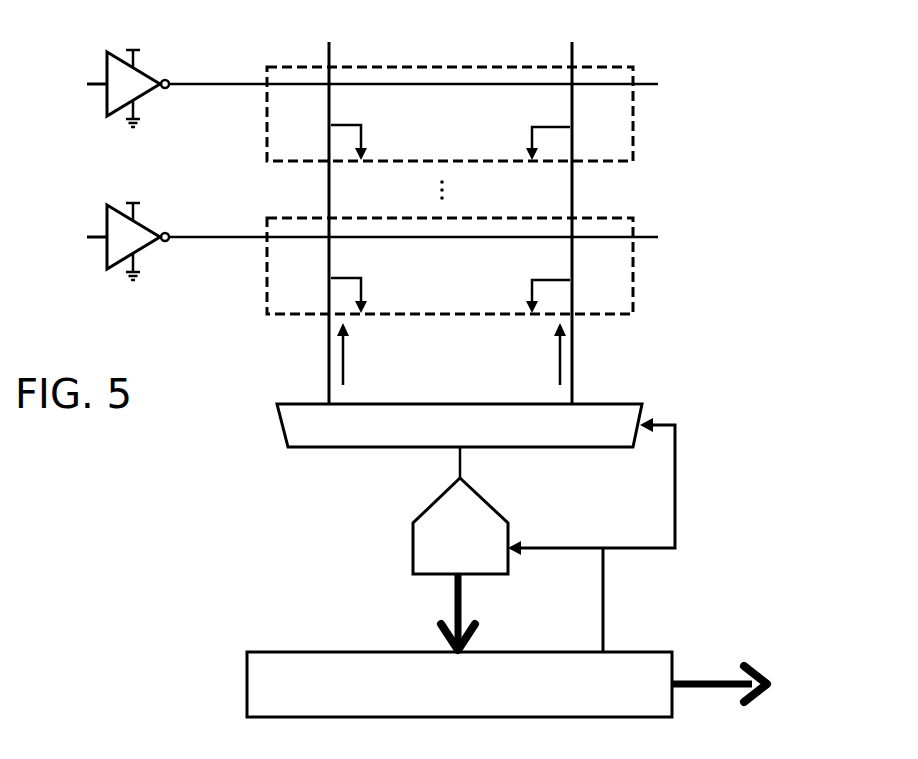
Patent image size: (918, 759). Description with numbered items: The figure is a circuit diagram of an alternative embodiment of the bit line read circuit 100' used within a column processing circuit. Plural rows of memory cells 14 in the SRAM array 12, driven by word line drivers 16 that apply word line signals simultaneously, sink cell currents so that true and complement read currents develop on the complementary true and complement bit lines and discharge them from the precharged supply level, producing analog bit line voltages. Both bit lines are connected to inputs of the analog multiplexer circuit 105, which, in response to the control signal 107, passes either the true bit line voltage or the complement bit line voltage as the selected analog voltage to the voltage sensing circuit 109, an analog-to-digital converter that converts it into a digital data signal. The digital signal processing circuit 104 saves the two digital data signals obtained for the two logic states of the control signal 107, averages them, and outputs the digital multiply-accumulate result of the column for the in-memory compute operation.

The bit line read circuit 100' is at (445, 367).
The array 12 is at (666, 180).
The memory cells 14 is at (633, 117).
The word line driver 16 is at (100, 101).
The digital signal processing circuit 104 is at (247, 683).
The analog multiplexer circuit 105 is at (277, 427).
The control signal 107 is at (607, 613).
The voltage sensing circuit 109 is at (412, 526).